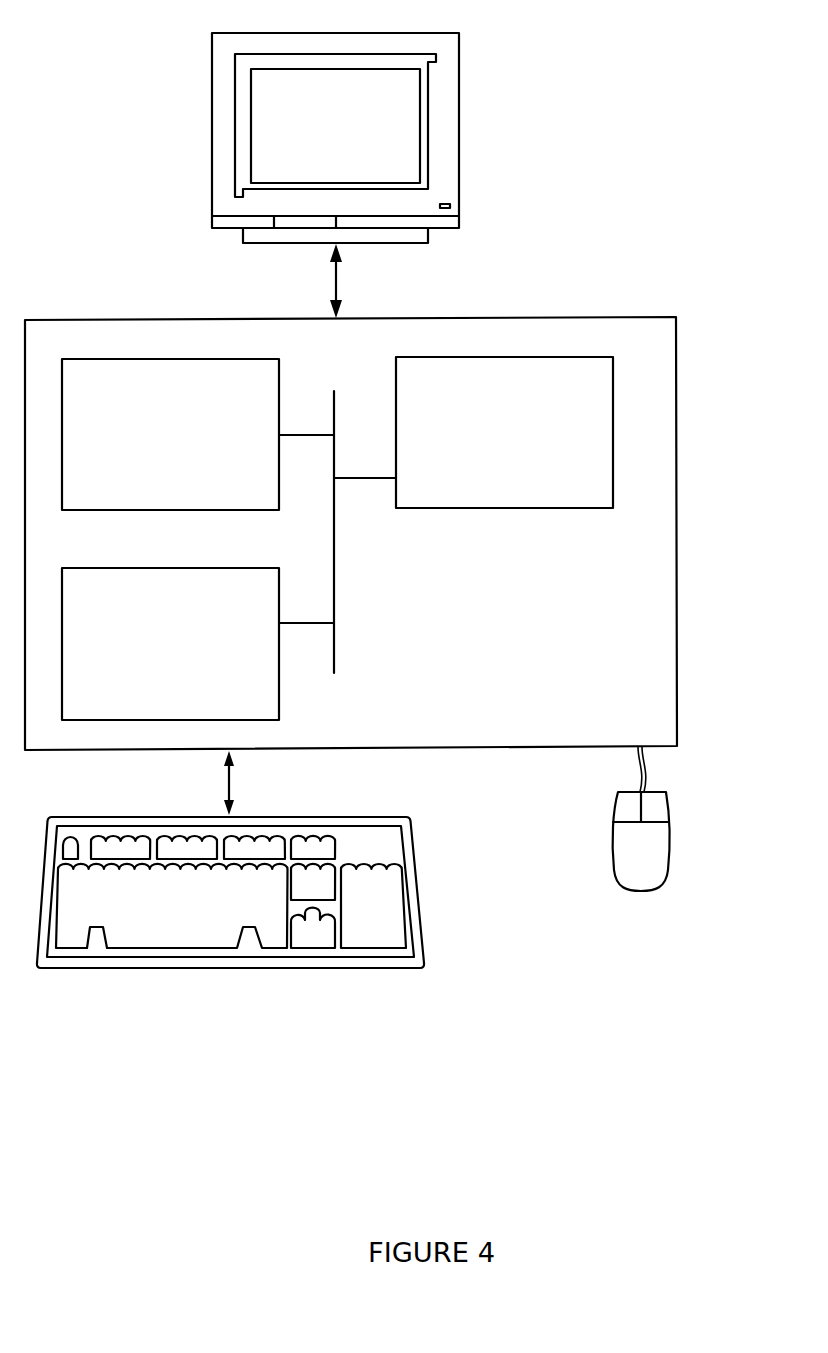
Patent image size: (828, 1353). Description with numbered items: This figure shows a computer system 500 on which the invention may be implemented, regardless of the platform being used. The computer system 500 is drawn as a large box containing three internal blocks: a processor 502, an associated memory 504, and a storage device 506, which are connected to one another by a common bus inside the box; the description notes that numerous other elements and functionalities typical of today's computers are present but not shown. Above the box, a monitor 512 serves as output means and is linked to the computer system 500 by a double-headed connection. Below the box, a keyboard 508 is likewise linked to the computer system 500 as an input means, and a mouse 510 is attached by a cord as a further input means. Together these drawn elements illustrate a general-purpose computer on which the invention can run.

The computer system 500 is at (655, 190).
The processor 502 is at (540, 444).
The memory 504 is at (190, 446).
The storage device 506 is at (188, 655).
The keyboard 508 is at (184, 928).
The mouse 510 is at (662, 863).
The monitor 512 is at (355, 141).